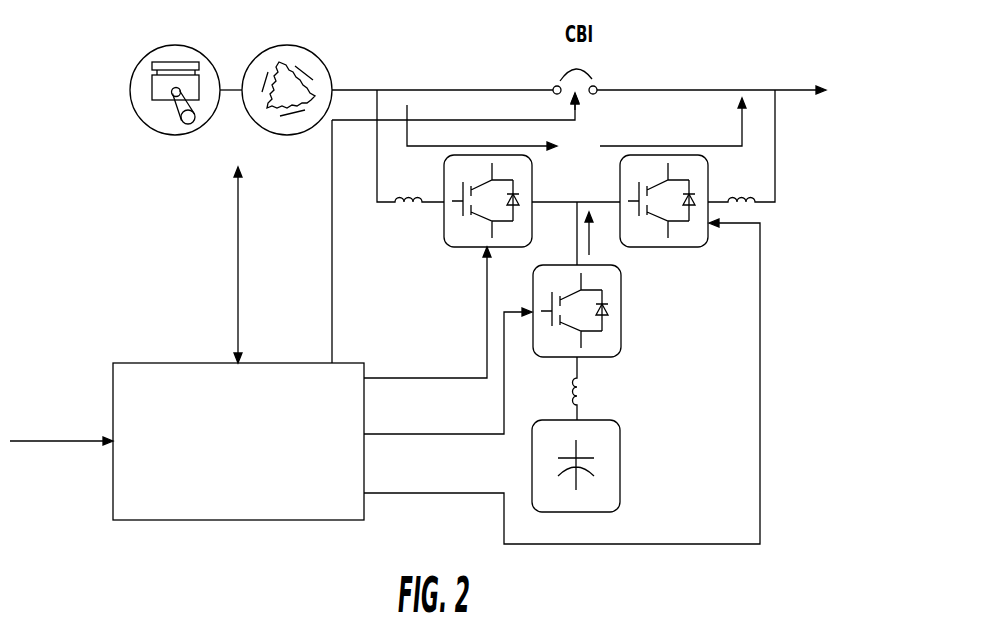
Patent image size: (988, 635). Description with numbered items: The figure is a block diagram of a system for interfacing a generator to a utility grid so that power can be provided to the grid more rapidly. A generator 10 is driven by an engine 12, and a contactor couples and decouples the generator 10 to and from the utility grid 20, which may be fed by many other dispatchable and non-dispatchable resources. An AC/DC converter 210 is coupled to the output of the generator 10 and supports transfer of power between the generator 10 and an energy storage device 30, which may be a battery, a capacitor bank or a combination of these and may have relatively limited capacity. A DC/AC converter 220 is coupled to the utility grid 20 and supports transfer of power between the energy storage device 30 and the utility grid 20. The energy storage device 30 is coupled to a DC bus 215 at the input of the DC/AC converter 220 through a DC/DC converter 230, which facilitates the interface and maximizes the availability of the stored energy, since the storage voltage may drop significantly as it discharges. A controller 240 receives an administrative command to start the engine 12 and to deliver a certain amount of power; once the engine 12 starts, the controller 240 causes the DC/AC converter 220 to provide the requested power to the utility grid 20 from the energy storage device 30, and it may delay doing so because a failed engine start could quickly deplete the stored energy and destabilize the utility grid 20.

The engine 12 is at (173, 44).
The generator 10 is at (292, 44).
The utility grid 20 is at (896, 78).
The AC/DC converter 210 is at (531, 162).
The DC bus 215 is at (594, 196).
The DC/AC converter 220 is at (711, 177).
The DC/DC converter 230 is at (618, 350).
The energy storage device 30 is at (616, 497).
The controller 240 is at (273, 521).